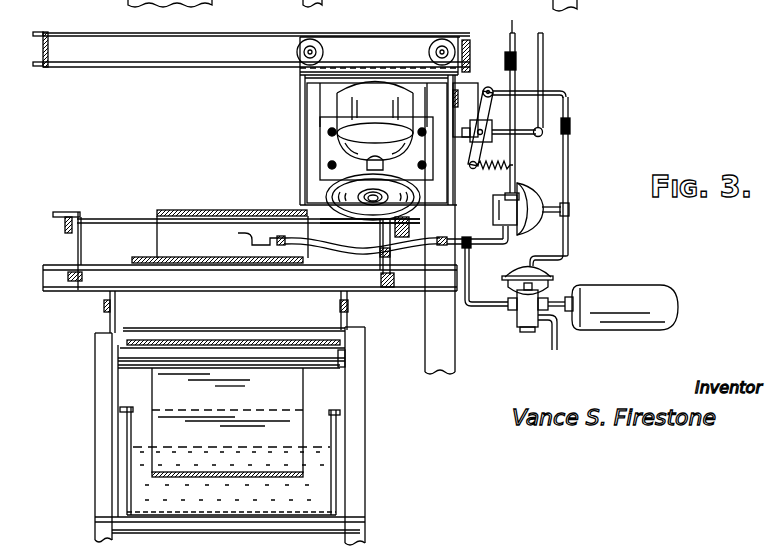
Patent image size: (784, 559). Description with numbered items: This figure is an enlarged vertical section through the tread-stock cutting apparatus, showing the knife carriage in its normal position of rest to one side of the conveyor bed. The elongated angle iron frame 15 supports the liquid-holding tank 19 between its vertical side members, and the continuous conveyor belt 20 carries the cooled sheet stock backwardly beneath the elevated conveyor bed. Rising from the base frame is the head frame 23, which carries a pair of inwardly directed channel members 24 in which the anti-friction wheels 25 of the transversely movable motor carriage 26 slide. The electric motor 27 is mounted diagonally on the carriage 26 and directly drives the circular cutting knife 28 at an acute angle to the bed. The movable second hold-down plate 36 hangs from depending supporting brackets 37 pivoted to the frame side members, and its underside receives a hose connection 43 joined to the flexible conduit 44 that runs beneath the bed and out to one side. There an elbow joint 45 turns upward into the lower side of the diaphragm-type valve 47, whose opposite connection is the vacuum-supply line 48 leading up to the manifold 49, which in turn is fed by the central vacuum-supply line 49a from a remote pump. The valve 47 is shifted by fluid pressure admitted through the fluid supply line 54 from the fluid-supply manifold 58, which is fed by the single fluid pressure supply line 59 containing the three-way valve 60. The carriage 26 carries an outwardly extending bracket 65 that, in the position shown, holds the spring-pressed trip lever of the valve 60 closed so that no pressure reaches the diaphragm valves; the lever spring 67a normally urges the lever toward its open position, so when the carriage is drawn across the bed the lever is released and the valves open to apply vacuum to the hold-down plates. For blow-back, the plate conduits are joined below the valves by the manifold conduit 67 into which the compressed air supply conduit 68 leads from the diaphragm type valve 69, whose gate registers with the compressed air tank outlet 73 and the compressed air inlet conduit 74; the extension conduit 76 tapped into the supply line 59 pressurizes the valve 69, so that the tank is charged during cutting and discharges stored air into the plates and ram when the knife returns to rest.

The angle iron frame 15 is at (90, 344).
The liquid-holding tank 19 is at (335, 432).
The conveyor belt 20 is at (217, 343).
The head frame 23 is at (46, 30).
The channel members 24 is at (224, 50).
The anti-friction wheels 25 is at (297, 28).
The motor carriage 26 is at (360, 65).
The electric motor 27 is at (337, 100).
The circular cutting knife 28 is at (350, 182).
The second hold-down plate 36 is at (172, 222).
The supporting brackets 37 is at (85, 242).
The hose connection 43 is at (250, 233).
The flexible conduit 44 is at (370, 250).
The elbow joint 45 is at (503, 238).
The diaphragm-type valve 47 is at (540, 188).
The vacuum-supply line 48 is at (512, 158).
The manifold 49 is at (513, 58).
The central vacuum-supply line 49a is at (512, 30).
The fluid supply line 54 is at (569, 173).
The fluid-supply manifold 58 is at (573, 121).
The fluid pressure supply line 59 is at (544, 52).
The three-way valve 60 is at (488, 163).
The bracket 65 is at (473, 82).
The manifold conduit 67 is at (486, 115).
The lever end 67a is at (477, 169).
The compressed air supply conduit 68 is at (468, 276).
The diaphragm type valve 69 is at (520, 313).
The compressed air tank outlet 73 is at (560, 307).
The compressed air inlet conduit 74 is at (553, 342).
The extension conduit 76 is at (569, 240).